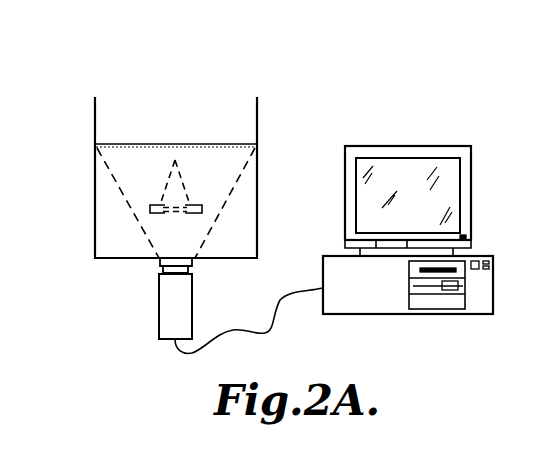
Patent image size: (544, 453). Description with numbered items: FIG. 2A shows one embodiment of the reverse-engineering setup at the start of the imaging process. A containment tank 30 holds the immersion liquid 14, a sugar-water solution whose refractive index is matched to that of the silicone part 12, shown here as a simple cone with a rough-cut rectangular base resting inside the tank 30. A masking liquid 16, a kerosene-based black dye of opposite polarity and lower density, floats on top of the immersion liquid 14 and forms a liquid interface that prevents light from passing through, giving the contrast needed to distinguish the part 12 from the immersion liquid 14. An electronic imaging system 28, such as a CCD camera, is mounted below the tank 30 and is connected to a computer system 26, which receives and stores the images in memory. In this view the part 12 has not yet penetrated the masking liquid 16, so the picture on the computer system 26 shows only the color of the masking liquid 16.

The part 12 is at (182, 177).
The immersion liquid 14 is at (110, 215).
The masking liquid 16 is at (138, 144).
The computer system 26 is at (406, 146).
The electronic imaging system 28 is at (193, 302).
The tank 30 is at (107, 258).